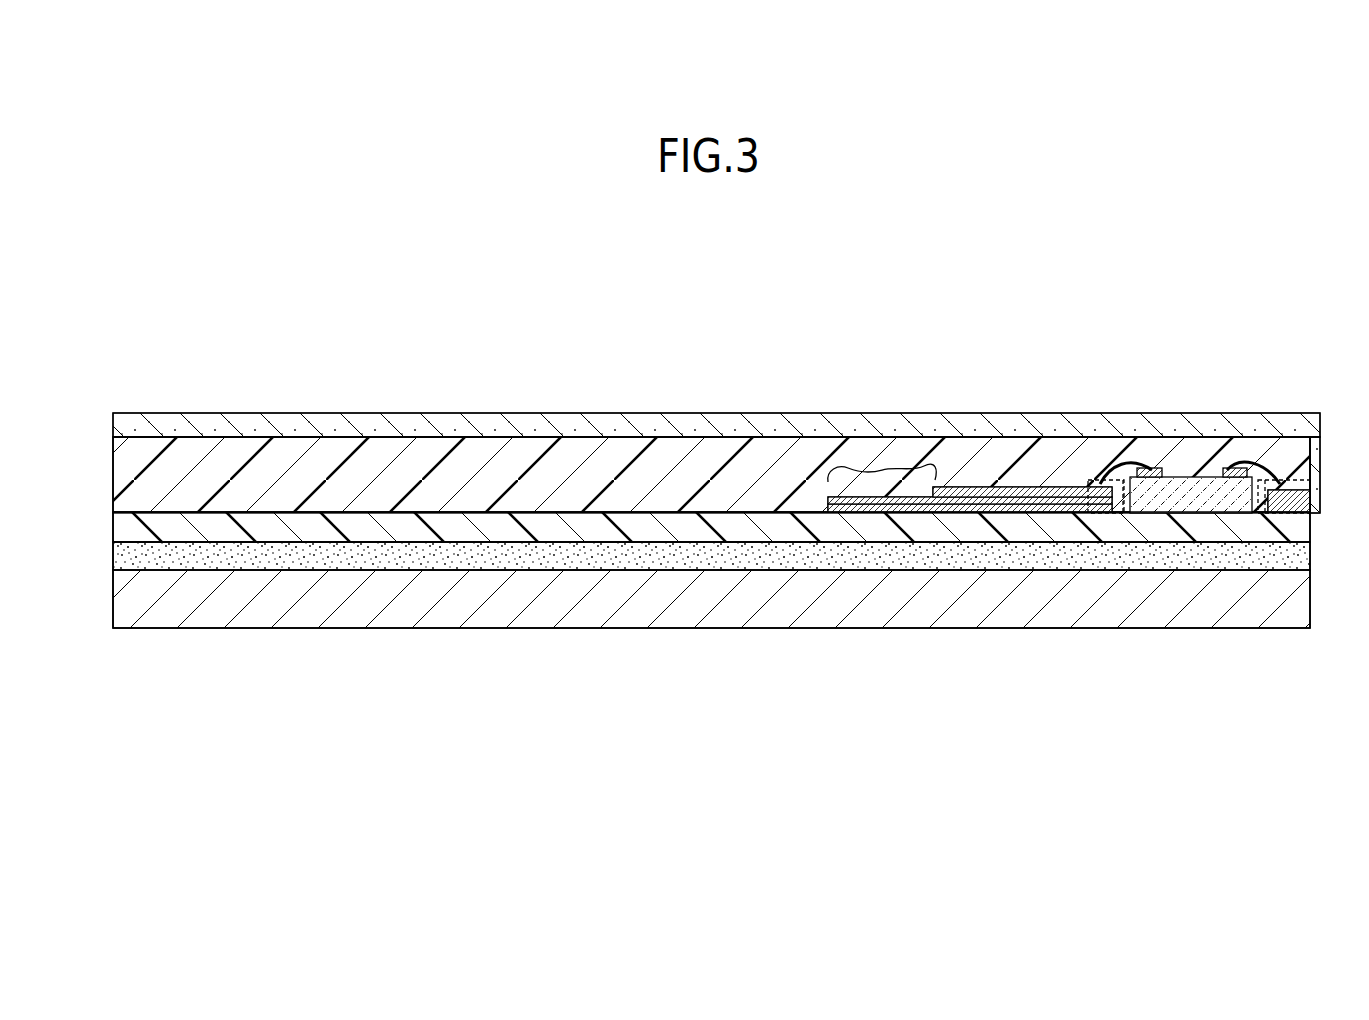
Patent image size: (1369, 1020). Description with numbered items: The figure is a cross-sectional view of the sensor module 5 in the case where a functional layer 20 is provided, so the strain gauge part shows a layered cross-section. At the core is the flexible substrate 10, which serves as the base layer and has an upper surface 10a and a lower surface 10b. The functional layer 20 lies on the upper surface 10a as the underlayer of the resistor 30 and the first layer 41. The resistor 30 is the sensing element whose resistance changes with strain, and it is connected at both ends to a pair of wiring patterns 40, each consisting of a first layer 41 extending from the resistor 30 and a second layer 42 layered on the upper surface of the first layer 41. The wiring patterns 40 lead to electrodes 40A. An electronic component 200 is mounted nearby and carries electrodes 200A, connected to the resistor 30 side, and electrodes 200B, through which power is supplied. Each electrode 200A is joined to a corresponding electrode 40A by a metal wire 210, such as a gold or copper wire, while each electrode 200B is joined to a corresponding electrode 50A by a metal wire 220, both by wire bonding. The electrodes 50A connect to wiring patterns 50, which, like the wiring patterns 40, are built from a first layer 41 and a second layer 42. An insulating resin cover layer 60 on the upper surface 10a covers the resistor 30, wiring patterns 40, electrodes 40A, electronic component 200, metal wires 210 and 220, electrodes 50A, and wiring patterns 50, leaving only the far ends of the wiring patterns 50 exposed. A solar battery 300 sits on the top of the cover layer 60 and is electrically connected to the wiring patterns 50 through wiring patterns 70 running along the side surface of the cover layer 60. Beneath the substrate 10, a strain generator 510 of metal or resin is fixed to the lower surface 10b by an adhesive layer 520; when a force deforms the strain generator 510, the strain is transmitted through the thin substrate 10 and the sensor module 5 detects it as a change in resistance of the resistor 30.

The sensor module 5 is at (153, 327).
The substrate 10 is at (142, 528).
The upper surface 10a is at (147, 512).
The lower surface 10b is at (147, 542).
The functional layer 20 is at (851, 505).
The resistor 30 is at (882, 470).
The wiring patterns 40 is at (1038, 688).
The electrodes 40A is at (1090, 478).
The first layer 41 is at (940, 512).
The second layer 42 is at (935, 488).
The wiring patterns 50 is at (1292, 688).
The electrodes 50A is at (1290, 478).
The cover layer 60 is at (652, 458).
The wiring patterns 70 is at (1322, 455).
The electronic component 200 is at (1188, 477).
The electrodes 200A is at (1158, 468).
The electrodes 200B is at (1226, 468).
The metal wire 210 is at (1125, 467).
The metal wire 220 is at (1256, 470).
The solar battery 300 is at (760, 428).
The strain generator 510 is at (1093, 610).
The adhesive layer 520 is at (1160, 556).